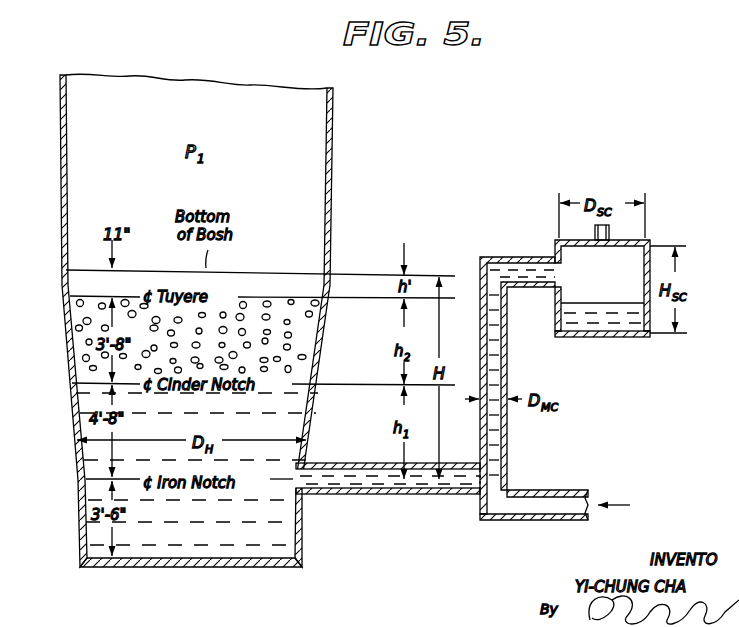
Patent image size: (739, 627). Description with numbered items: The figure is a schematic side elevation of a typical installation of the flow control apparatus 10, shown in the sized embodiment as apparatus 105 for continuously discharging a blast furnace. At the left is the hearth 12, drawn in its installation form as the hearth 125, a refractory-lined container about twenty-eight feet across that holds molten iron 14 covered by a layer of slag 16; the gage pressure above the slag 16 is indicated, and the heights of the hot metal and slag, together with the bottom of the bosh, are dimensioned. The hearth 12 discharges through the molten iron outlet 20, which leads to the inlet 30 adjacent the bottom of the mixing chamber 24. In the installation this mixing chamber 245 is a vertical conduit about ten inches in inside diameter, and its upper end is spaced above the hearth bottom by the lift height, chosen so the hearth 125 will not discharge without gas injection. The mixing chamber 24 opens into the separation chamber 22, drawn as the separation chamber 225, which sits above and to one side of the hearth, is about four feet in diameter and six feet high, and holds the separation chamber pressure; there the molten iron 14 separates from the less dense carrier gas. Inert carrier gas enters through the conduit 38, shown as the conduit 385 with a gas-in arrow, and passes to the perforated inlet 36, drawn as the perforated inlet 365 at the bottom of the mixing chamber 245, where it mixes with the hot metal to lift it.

The flow control apparatus 10 is at (429, 127).
The flow control apparatus 105 is at (347, 339).
The hearth 12 is at (334, 190).
The hearth 125 is at (222, 320).
The molten iron 14 is at (237, 552).
The slag 16 is at (78, 320).
The molten iron outlet 20 is at (317, 462).
The separation chamber 22 is at (600, 340).
The separation chamber 225 is at (602, 300).
The mixing chamber 24 is at (509, 366).
The mixing chamber 245 is at (517, 385).
The inlet 30 is at (483, 480).
The perforated inlet 36 is at (496, 520).
The perforated inlet 365 is at (532, 527).
The conduit 38 is at (541, 489).
The conduit 385 is at (547, 474).